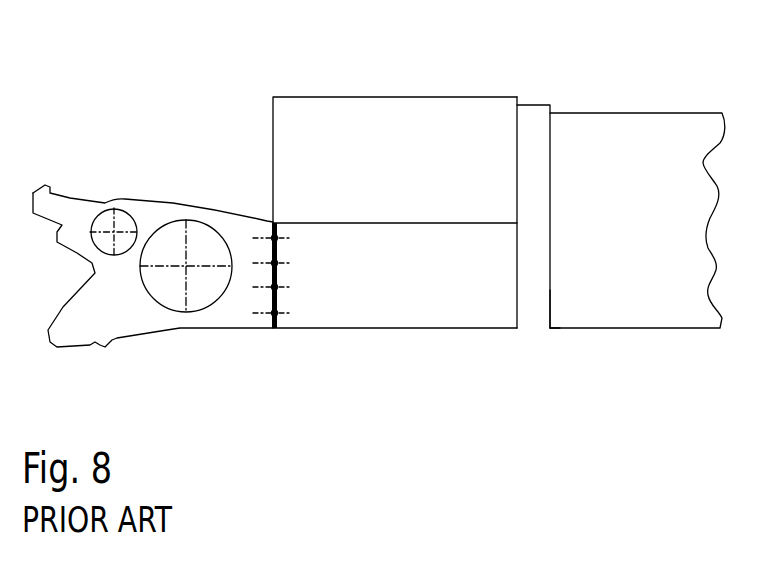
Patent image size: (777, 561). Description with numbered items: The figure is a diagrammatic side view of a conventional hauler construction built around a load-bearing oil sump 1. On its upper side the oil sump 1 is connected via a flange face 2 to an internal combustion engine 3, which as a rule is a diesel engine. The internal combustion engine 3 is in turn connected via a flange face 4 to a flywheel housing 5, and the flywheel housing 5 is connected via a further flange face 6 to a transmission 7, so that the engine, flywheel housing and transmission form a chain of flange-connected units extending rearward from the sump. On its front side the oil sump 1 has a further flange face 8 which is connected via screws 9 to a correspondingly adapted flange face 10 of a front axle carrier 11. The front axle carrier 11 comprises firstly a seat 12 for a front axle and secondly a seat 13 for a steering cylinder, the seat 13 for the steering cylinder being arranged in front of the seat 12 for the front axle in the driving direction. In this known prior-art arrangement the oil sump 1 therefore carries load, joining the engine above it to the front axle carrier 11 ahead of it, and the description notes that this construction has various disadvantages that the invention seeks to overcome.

The oil sump 1 is at (425, 305).
The flange face 2 is at (315, 222).
The internal combustion engine 3 is at (305, 115).
The flange face 4 is at (513, 133).
The flywheel housing 5 is at (528, 122).
The flange face 6 is at (552, 302).
The transmission 7 is at (612, 132).
The flange face 8 is at (278, 320).
The screws 9 is at (275, 323).
The flange face 10 is at (273, 300).
The front axle carrier 11 is at (108, 310).
The seat for a front axle 12 is at (172, 235).
The seat for a steering cylinder 13 is at (110, 214).